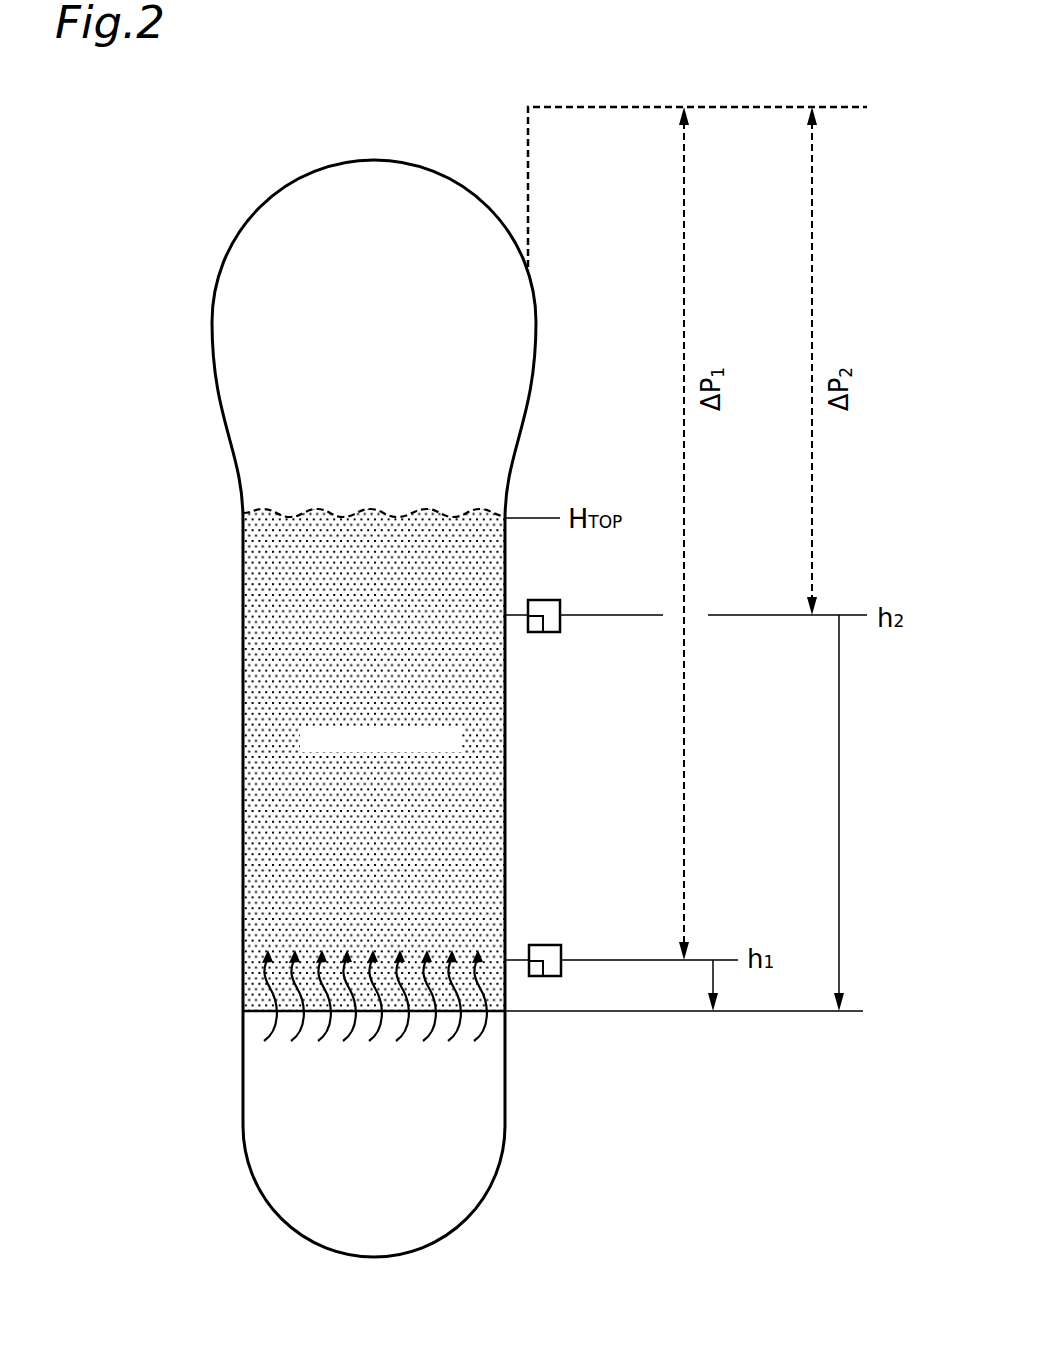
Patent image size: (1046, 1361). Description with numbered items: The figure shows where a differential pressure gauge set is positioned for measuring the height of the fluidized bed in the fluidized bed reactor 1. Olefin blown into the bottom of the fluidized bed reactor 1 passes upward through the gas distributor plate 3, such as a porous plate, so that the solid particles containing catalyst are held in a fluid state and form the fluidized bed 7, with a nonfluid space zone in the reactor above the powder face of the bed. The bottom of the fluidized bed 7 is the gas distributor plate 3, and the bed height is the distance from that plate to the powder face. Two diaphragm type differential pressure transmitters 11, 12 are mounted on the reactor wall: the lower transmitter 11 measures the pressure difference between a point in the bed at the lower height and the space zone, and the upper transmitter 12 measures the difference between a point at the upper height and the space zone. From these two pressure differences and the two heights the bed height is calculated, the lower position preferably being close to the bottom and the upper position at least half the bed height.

The fluidized bed reactor 1 is at (188, 276).
The gas distributor plate 3 is at (503, 1035).
The fluidized bed 7 is at (282, 705).
The diaphragm type differential pressure transmitter 11 is at (546, 945).
The diaphragm type differential pressure transmitter 12 is at (546, 600).